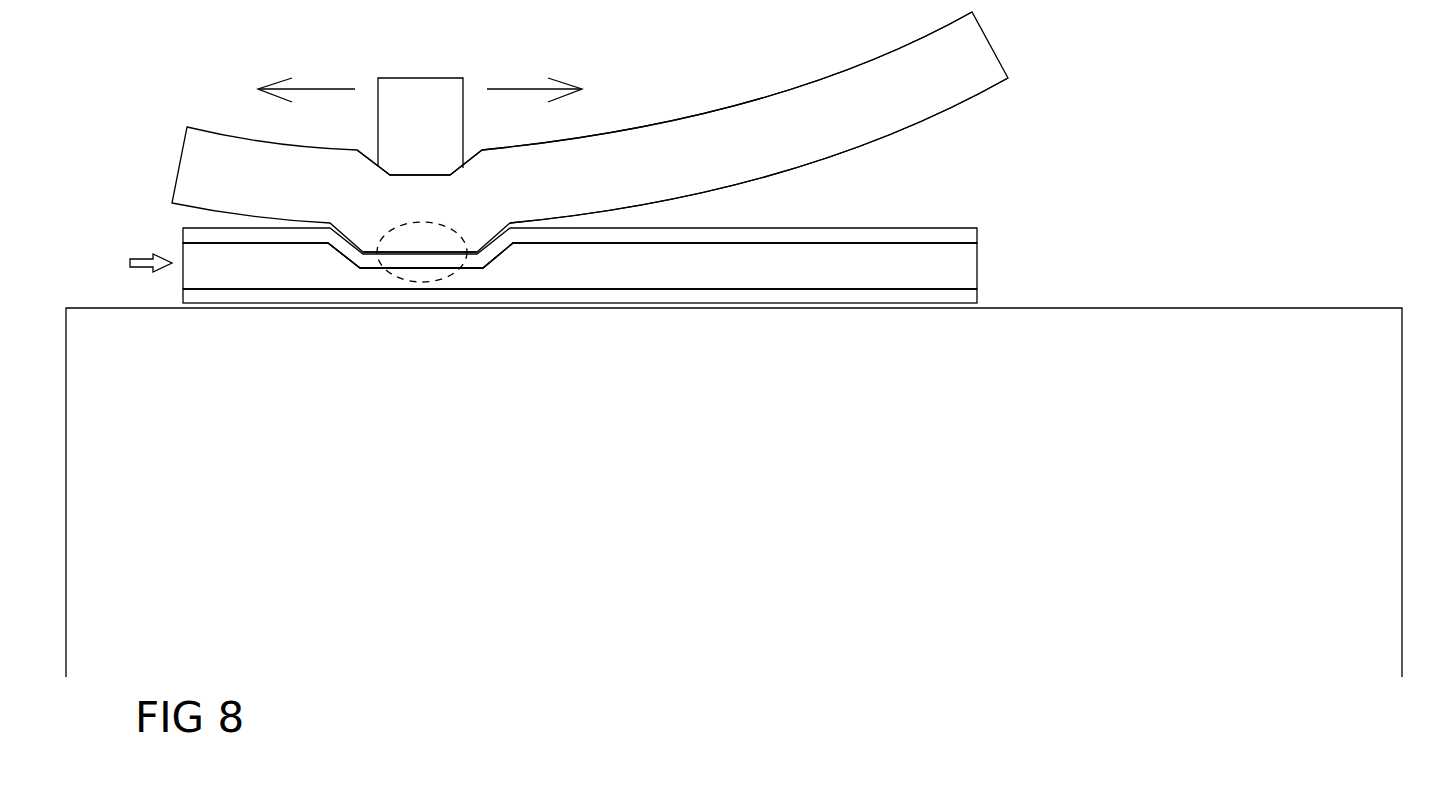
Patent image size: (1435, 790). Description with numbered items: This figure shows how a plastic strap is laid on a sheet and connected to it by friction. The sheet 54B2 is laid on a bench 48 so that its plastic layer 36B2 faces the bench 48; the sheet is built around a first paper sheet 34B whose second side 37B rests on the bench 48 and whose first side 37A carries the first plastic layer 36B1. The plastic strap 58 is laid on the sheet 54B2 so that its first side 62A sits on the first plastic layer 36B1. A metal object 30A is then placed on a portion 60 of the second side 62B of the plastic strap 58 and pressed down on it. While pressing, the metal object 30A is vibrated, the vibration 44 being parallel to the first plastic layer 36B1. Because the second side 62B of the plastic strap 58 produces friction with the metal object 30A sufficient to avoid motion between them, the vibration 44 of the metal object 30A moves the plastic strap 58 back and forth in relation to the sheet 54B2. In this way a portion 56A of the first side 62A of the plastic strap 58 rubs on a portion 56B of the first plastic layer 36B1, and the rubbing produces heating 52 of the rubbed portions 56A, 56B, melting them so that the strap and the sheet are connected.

The metal object 30A is at (420, 123).
The vibrating 44 is at (420, 76).
The bench 48 is at (384, 453).
The heating 52 is at (400, 226).
The sheet 54B2 is at (119, 264).
The portion of the first side of the plastic object 56A is at (428, 252).
The portion of the first plastic layer 56B is at (430, 260).
The plastic strap 58 is at (735, 133).
The portion of the second side of the plastic object 60 is at (420, 177).
The first side of the plastic object 62A is at (760, 182).
The second side of the plastic object 62B is at (665, 123).
The first paper sheet 34B is at (692, 263).
The first plastic layer 36B1 is at (768, 237).
The plastic layer 36B2 is at (613, 297).
The first side of the first paper sheet 37A is at (977, 240).
The second side of the first paper sheet 37B is at (977, 291).